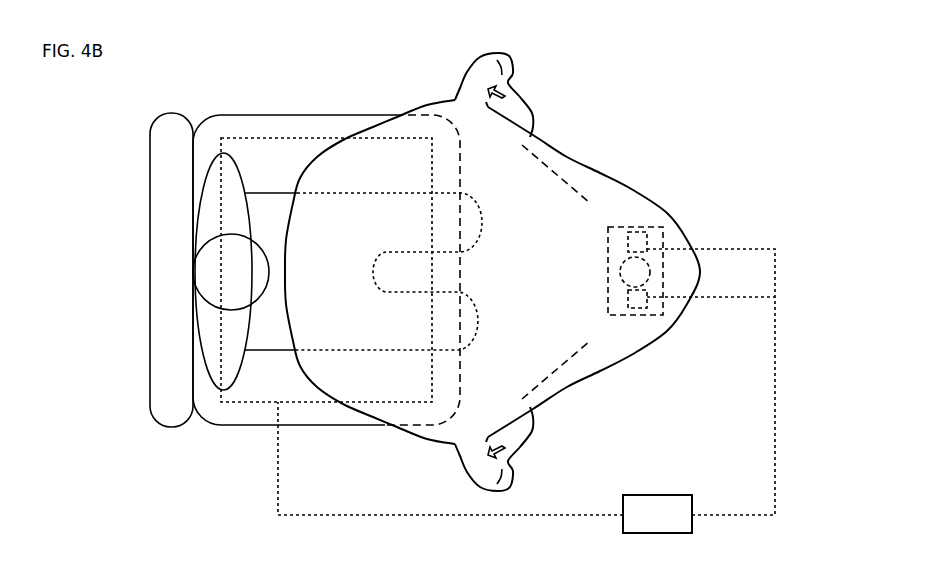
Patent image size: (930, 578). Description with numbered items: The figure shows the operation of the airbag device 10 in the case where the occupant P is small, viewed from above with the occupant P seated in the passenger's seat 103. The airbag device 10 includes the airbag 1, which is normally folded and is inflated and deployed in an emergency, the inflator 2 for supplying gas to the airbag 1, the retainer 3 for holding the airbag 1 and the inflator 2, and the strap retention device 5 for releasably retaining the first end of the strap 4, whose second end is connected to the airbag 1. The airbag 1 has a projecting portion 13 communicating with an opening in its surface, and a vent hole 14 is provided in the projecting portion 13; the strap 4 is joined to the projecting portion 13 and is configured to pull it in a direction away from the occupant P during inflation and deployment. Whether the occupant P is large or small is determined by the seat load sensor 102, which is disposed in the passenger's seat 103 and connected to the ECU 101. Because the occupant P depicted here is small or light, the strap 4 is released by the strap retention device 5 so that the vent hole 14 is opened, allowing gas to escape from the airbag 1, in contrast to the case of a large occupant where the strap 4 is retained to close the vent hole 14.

The passenger's seat 103 is at (207, 97).
The seat load sensor 102 is at (278, 138).
The occupant P is at (205, 270).
The airbag device 10 is at (501, 266).
The airbag 1 is at (570, 395).
The strap 4 is at (535, 110).
The projecting portion 13 is at (460, 80).
The vent hole 14 is at (490, 77).
The inflator 2 is at (620, 255).
The strap retention device 5 is at (635, 232).
The retainer 3 is at (605, 307).
The ECU 101 is at (526, 391).